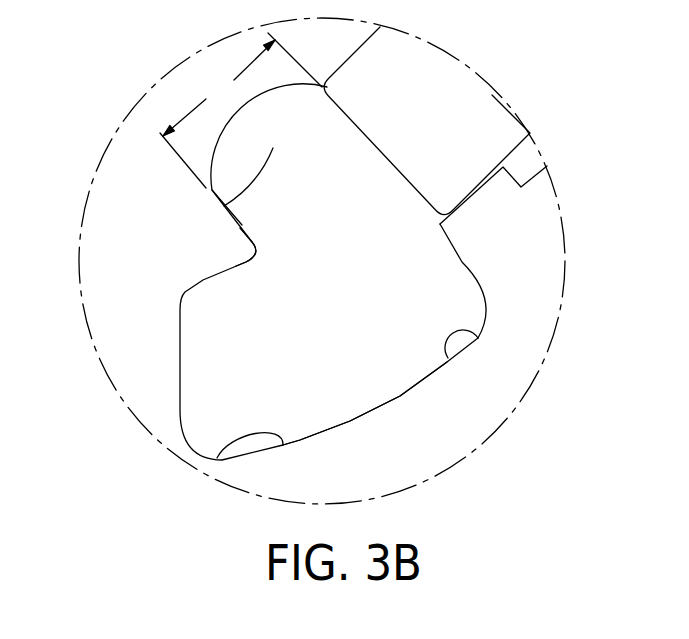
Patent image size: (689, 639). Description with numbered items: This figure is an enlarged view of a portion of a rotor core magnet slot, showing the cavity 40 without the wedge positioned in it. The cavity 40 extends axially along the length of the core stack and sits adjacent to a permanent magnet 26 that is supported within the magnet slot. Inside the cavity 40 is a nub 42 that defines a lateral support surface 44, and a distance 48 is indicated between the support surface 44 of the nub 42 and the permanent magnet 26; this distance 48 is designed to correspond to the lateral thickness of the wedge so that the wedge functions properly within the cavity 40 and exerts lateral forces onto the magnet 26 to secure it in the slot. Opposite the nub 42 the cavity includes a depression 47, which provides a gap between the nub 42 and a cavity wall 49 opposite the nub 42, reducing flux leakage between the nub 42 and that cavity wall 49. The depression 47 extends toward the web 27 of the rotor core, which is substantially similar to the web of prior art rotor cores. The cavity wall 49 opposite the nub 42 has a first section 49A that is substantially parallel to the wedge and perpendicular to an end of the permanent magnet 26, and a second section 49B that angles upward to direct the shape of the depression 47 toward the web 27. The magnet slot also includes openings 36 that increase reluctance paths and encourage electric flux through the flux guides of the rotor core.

The permanent magnet 26 is at (455, 108).
The web 27 is at (147, 316).
The opening 36 is at (273, 343).
The cavity 40 is at (224, 206).
The nub 42 is at (247, 247).
The lateral support surface 44 is at (242, 225).
The depression 47 is at (203, 352).
The distance 48 is at (241, 110).
The cavity wall 49 is at (390, 403).
The first section 49A is at (478, 338).
The second section 49B is at (260, 437).